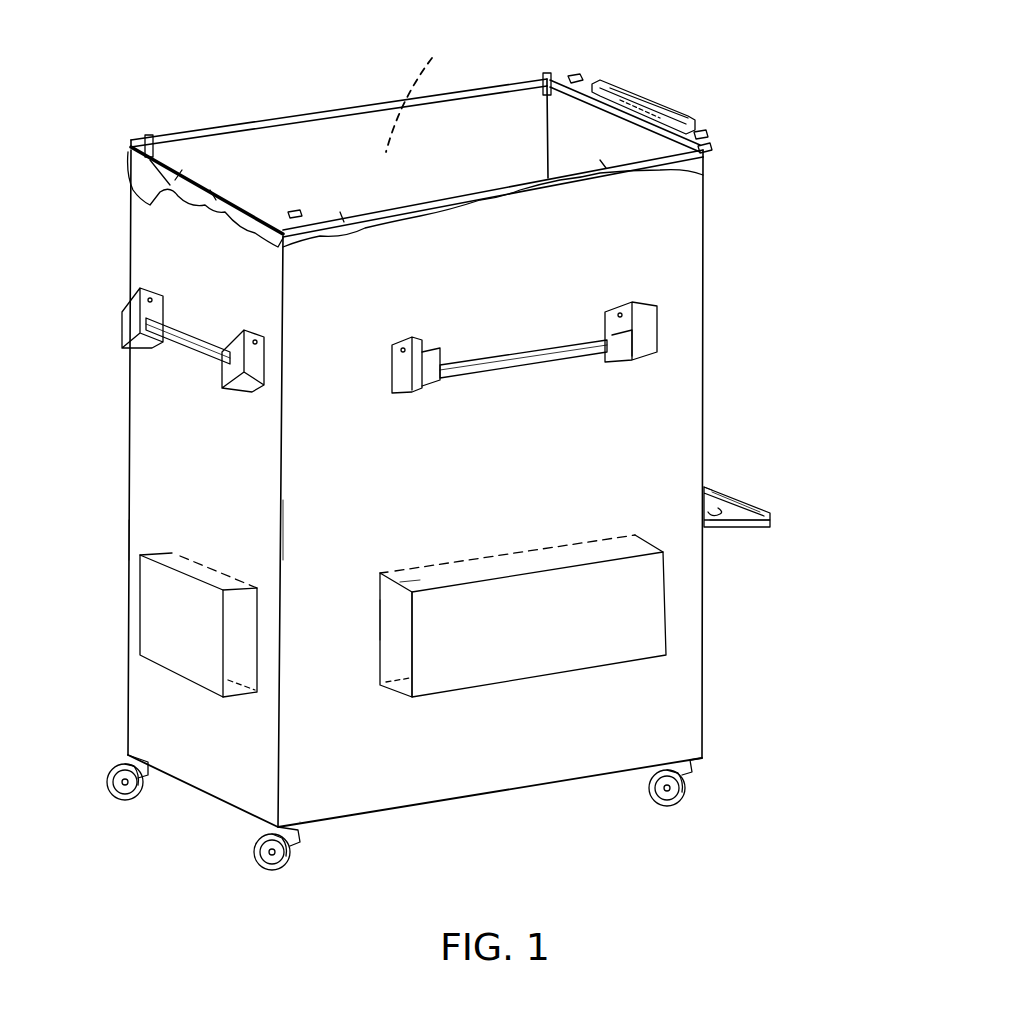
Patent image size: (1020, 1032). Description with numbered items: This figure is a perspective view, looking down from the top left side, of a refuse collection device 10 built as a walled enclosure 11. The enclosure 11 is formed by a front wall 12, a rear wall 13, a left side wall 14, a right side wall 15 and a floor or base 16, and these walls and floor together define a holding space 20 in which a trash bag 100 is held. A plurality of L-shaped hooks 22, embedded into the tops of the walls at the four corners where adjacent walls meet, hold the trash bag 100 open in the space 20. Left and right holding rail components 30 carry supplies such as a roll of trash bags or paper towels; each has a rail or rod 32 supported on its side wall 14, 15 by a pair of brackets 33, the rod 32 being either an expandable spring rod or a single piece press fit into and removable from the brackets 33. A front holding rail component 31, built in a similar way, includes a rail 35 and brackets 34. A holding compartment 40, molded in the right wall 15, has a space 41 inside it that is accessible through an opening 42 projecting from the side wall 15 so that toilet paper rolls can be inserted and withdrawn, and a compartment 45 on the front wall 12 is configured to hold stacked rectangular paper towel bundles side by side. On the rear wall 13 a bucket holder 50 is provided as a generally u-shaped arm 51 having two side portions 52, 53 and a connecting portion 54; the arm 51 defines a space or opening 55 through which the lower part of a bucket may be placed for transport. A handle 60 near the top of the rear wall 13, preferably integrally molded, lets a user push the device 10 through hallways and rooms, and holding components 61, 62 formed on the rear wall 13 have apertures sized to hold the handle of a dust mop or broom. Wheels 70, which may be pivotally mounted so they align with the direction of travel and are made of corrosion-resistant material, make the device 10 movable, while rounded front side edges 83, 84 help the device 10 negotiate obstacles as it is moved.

The refuse collection device 10 is at (382, 454).
The walled enclosure 11 is at (127, 268).
The front wall 12 is at (152, 430).
The rear wall 13 is at (705, 400).
The left side wall 14 is at (420, 91).
The right side wall 15 is at (315, 760).
The floor or base 16 is at (405, 818).
The holding space 20 is at (455, 172).
The hooks 22 is at (145, 138).
The left and right holding rail components 30 is at (499, 358).
The front holding rail component 31 is at (153, 397).
The rail or rod 32 is at (503, 352).
The brackets 33 is at (395, 366).
The brackets 34 is at (128, 322).
The rail 35 is at (158, 348).
The holding compartment 40 is at (498, 641).
The space 41 is at (458, 580).
The opening 42 is at (386, 618).
The front holding compartment 45 is at (168, 630).
The bucket holder 50 is at (772, 548).
The u-shaped arm 51 is at (772, 514).
The side portion 52 is at (730, 528).
The side portion 53 is at (706, 487).
The connecting portion 54 is at (742, 498).
The space or opening 55 is at (716, 527).
The handle 60 is at (652, 104).
The holding component 61 is at (586, 78).
The holding component 62 is at (706, 132).
The wheels 70 is at (107, 776).
The rounded front side edge 83 is at (278, 555).
The rounded front side edge 84 is at (127, 540).
The trash bag 100 is at (150, 178).